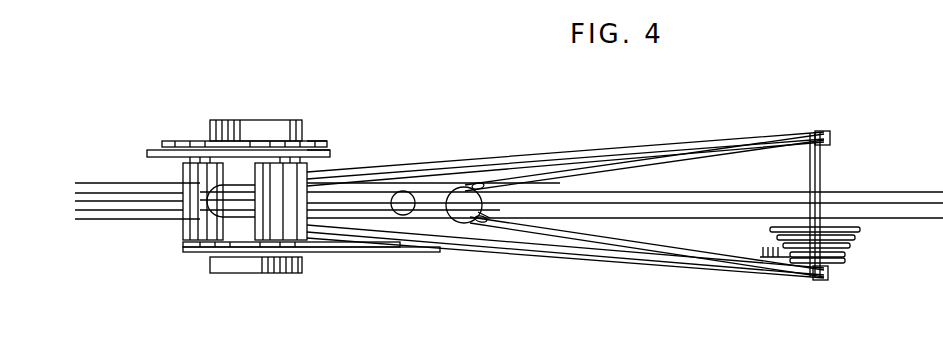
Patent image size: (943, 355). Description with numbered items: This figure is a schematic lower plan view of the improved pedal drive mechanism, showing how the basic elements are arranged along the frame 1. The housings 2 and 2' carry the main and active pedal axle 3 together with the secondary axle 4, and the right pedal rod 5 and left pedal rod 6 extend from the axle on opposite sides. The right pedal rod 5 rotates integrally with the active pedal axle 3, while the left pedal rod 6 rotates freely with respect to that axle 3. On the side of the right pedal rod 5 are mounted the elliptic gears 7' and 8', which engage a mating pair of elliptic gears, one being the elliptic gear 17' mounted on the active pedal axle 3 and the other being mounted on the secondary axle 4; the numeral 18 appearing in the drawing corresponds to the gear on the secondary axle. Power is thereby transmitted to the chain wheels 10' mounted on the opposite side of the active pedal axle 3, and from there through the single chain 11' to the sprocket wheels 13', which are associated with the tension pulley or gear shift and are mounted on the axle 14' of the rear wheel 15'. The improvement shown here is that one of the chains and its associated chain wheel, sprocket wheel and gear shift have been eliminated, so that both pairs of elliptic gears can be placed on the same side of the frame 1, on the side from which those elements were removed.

The frame 1 is at (112, 183).
The housing 2 is at (569, 148).
The housing 2' is at (192, 239).
The main and active pedal axle 3 is at (290, 158).
The secondary axle 4 is at (198, 163).
The right pedal rod 5 is at (258, 128).
The left pedal rod 6 is at (243, 265).
The elliptic gear 7' is at (352, 115).
The elliptic gear 8' is at (565, 133).
The chain wheels 10' is at (322, 279).
The chain 11' is at (565, 270).
The sprocket wheels 13' is at (810, 284).
The axle of rear wheel 14' is at (787, 181).
The rear wheel 15' is at (647, 263).
The elliptic gear 17' is at (238, 113).
The lower plate 18 is at (148, 152).